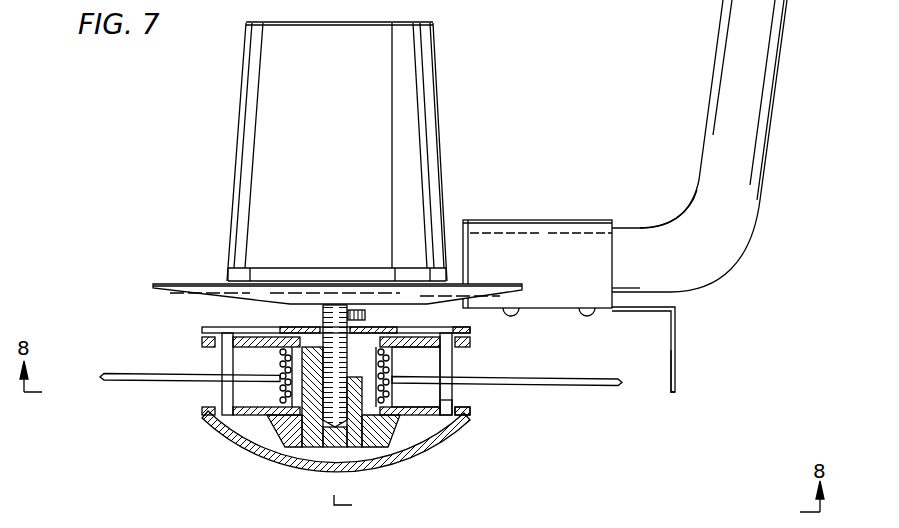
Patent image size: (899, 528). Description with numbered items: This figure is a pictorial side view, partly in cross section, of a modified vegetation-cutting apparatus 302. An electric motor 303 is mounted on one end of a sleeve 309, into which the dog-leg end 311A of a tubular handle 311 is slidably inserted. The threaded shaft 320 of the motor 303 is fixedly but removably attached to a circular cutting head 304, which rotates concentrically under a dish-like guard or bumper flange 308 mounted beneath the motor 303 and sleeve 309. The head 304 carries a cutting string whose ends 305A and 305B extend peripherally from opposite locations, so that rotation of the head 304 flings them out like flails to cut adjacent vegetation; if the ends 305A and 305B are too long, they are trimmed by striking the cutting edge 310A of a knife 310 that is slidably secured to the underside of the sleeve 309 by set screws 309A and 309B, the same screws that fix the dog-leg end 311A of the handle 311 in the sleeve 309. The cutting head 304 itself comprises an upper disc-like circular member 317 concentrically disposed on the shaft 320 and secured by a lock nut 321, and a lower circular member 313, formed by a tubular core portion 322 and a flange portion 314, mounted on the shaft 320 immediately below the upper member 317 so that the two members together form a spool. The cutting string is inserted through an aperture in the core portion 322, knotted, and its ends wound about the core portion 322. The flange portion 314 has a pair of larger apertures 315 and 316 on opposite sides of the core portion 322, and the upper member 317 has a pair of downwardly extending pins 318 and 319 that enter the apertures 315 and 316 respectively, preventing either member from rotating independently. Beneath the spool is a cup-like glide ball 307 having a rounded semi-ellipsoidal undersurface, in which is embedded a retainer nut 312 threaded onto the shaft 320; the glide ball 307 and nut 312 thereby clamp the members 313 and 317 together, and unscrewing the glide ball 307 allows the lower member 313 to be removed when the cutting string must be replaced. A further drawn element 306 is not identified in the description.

The apparatus 302 is at (579, 48).
The electric motor 303 is at (437, 50).
The circular cutting head 304 is at (179, 341).
The end of cutting string 305A is at (123, 384).
The end of cutting string 305B is at (598, 387).
The coil spring 306 is at (378, 327).
The glide ball 307 is at (412, 455).
The bumper flange 308 is at (178, 283).
The sleeve 309 is at (520, 219).
The set screw 309A is at (523, 315).
The set screw 309B is at (598, 315).
The knife 310 is at (678, 318).
The cutting edge 310A is at (684, 362).
The tubular handle 311 is at (786, 46).
The dog-leg end 311A is at (647, 226).
The retainer nut 312 is at (365, 442).
The lower circular member 313 is at (422, 368).
The flange portion 314 is at (447, 404).
The aperture 315 is at (448, 418).
The aperture 316 is at (228, 436).
The upper circular member 317 is at (405, 333).
The pin 318 is at (457, 355).
The pin 319 is at (204, 360).
The shaft 320 is at (330, 424).
The lock nut 321 is at (305, 326).
The tubular core portion 322 is at (273, 418).